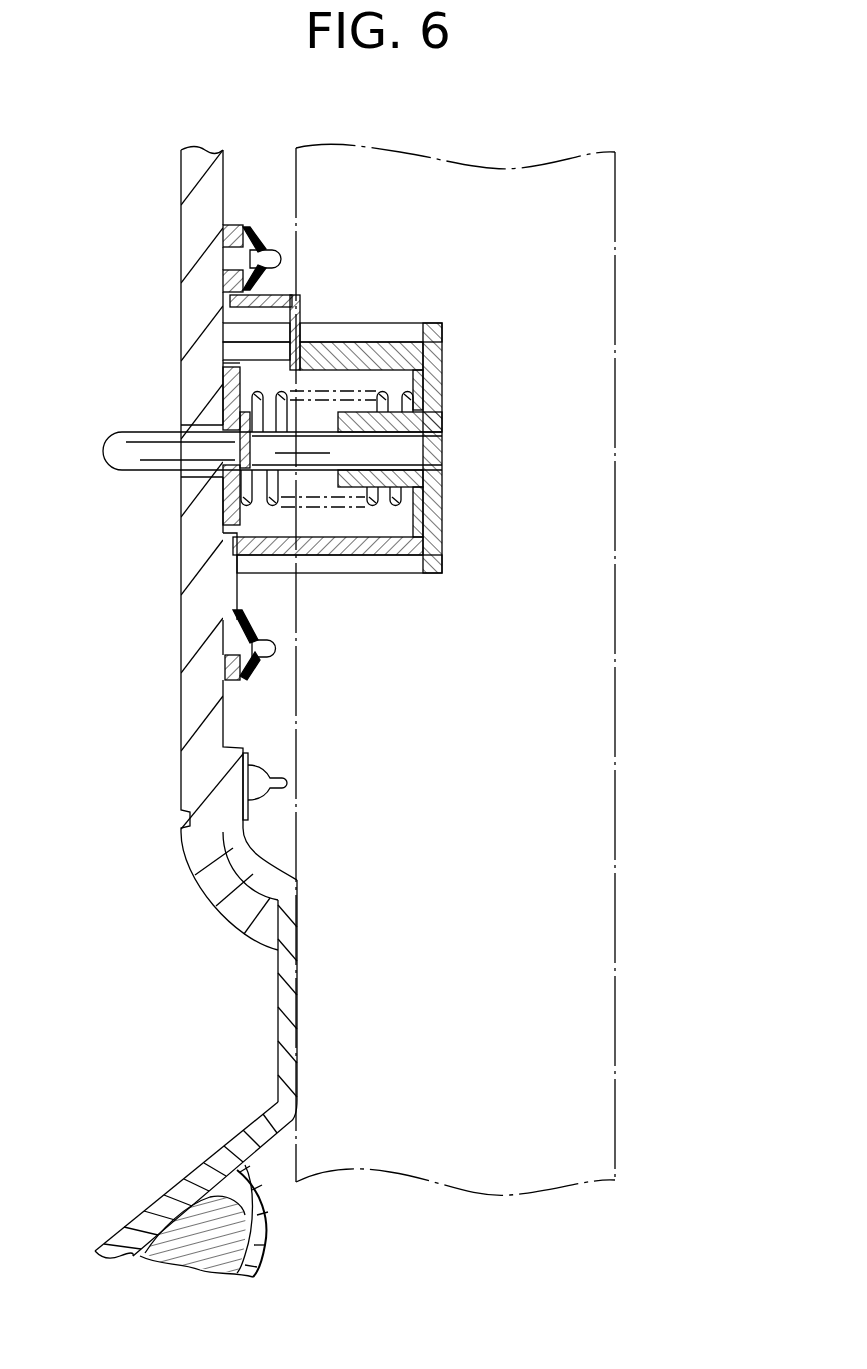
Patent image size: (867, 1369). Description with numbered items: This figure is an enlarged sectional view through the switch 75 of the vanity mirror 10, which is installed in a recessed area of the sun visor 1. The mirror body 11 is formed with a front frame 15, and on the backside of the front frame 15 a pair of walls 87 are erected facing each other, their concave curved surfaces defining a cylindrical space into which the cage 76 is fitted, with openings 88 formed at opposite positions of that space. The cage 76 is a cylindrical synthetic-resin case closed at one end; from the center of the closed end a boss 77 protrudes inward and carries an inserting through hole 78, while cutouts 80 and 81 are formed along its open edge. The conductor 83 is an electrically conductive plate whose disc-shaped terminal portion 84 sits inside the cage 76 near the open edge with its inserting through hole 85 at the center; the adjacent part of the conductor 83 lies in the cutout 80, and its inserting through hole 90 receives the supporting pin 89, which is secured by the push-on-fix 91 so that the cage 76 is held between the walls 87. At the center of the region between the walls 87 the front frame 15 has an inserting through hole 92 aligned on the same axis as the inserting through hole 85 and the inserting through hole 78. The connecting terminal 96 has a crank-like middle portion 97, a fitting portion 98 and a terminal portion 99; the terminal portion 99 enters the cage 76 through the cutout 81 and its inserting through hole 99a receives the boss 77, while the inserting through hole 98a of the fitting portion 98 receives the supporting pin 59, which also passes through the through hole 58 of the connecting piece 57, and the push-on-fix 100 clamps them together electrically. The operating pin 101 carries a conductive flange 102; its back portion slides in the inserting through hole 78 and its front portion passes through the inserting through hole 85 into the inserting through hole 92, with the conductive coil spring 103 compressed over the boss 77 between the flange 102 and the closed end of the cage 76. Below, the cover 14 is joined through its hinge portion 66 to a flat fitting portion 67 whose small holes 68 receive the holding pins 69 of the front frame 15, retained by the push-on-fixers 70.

The sun visor 1 is at (672, 250).
The vanity mirror 10 is at (176, 549).
The mirror body 11 is at (182, 715).
The cover 14 is at (160, 1193).
The front frame 15 is at (186, 845).
The connecting piece 57 is at (240, 222).
The through hole 58 is at (225, 237).
The supporting pin 59 is at (280, 258).
The hinge portion 66 is at (296, 1104).
The fitting portion 67 is at (297, 913).
The small holes 68 is at (235, 790).
The holding pins 69 is at (272, 777).
The push-on-fixers 70 is at (265, 805).
The switch 75 is at (330, 437).
The cage 76 is at (443, 395).
The boss 77 is at (356, 482).
The inserting through hole 78 is at (432, 437).
The cutout 80 is at (262, 548).
The cutout 81 is at (300, 345).
The conductor 83 is at (226, 592).
The terminal portion 84 is at (226, 390).
The inserting through hole 85 is at (235, 470).
The walls 87 is at (422, 325).
The openings 88 is at (223, 330).
The supporting pin 89 is at (277, 650).
The inserting through hole 90 is at (226, 645).
The push-on-fix 91 is at (250, 672).
The inserting through hole 92 is at (240, 428).
The connecting terminal 96 is at (291, 296).
The middle portion 97 is at (357, 360).
The fitting portion 98 is at (234, 226).
The inserting through hole 98a is at (225, 283).
The terminal portion 99 is at (422, 500).
The inserting through hole 99a is at (426, 478).
The push-on-fix 100 is at (262, 248).
The operating pin 101 is at (106, 453).
The flange 102 is at (226, 364).
The coil spring 103 is at (385, 492).